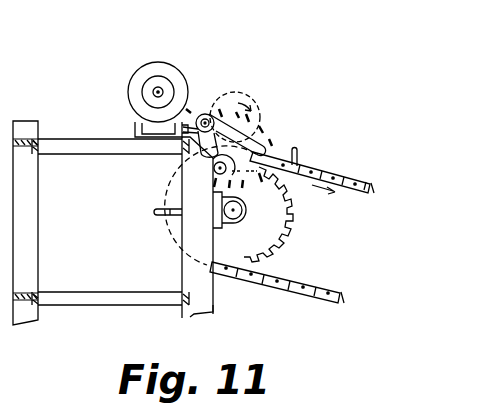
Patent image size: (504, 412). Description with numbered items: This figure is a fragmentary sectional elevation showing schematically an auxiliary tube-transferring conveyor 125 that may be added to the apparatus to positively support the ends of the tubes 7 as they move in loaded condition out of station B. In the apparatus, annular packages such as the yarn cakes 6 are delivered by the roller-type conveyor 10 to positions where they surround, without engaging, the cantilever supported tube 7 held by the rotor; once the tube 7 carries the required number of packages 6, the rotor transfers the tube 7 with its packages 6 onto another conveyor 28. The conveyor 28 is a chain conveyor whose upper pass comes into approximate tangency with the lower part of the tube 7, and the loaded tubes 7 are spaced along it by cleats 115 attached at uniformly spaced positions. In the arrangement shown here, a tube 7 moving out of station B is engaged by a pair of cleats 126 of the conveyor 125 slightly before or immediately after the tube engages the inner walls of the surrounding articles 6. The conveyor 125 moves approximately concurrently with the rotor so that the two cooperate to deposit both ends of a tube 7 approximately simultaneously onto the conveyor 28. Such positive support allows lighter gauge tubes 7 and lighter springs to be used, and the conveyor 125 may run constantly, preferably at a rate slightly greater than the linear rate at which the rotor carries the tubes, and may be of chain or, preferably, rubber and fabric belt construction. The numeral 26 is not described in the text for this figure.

The yarn cakes 6 is at (136, 82).
The cantilever supported tube 7 is at (163, 88).
The station B is at (158, 84).
The roller-type conveyor 10 is at (152, 127).
The cleats 126 is at (198, 106).
The auxiliary tube-transferring conveyor 125 is at (268, 133).
The conveyor 28 is at (358, 182).
The cleats 115 is at (298, 159).
The adjacent element 26 is at (3, 22).